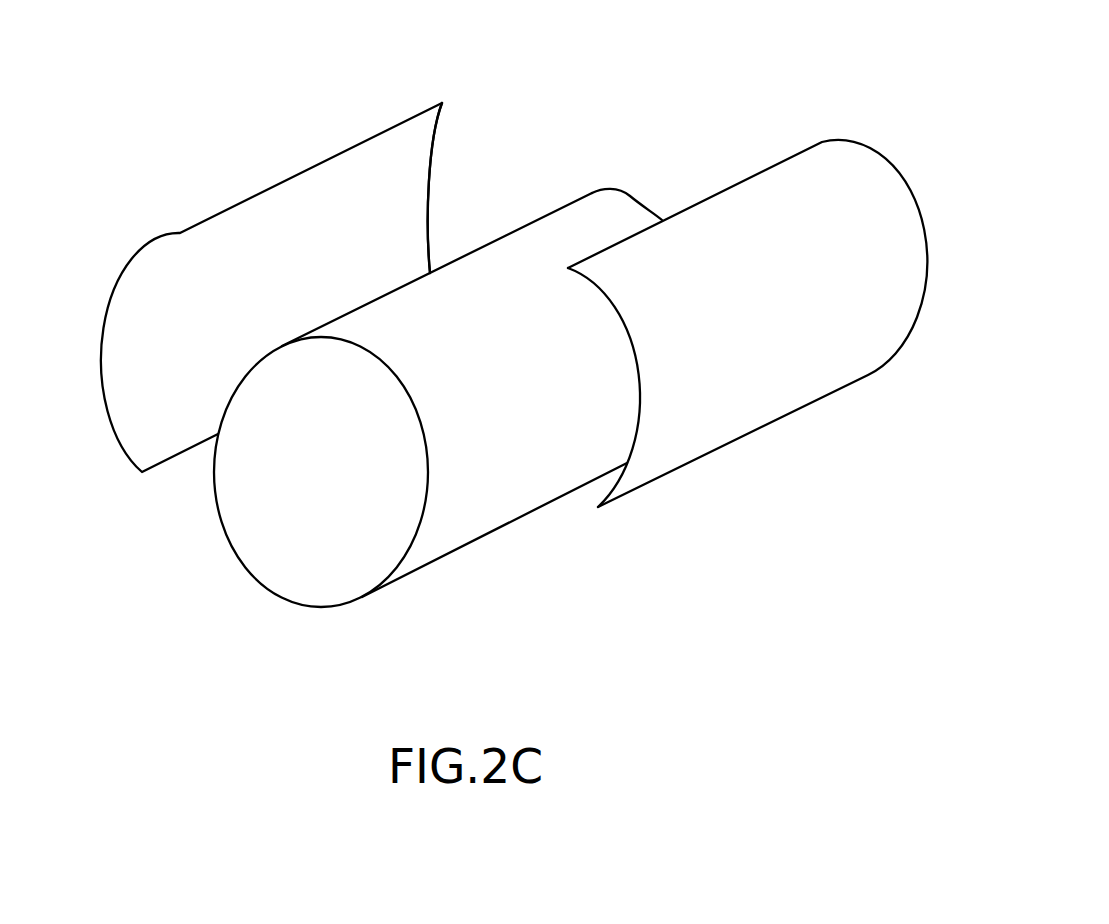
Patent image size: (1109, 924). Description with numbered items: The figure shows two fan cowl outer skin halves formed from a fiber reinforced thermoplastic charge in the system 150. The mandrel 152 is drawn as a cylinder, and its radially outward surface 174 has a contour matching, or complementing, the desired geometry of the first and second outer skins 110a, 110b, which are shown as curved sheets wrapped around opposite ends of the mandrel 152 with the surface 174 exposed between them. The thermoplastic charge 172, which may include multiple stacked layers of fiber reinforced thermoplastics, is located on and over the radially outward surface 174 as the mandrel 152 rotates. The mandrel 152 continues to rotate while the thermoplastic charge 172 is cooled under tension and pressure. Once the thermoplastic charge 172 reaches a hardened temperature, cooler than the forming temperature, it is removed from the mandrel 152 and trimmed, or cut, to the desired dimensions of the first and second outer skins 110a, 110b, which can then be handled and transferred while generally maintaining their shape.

The system 150 is at (499, 311).
The mandrel 152 is at (248, 500).
The first outer skin 110a is at (425, 165).
The second outer skin 110b is at (843, 175).
The thermoplastic charge 172 is at (689, 145).
The radially outward surface 174 is at (508, 337).